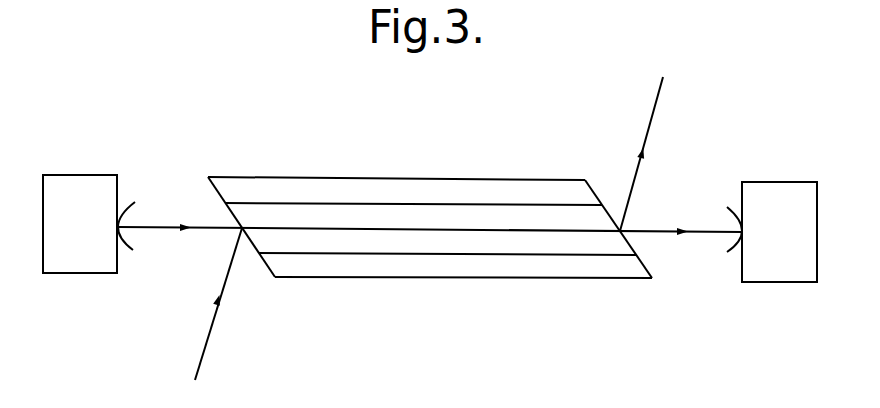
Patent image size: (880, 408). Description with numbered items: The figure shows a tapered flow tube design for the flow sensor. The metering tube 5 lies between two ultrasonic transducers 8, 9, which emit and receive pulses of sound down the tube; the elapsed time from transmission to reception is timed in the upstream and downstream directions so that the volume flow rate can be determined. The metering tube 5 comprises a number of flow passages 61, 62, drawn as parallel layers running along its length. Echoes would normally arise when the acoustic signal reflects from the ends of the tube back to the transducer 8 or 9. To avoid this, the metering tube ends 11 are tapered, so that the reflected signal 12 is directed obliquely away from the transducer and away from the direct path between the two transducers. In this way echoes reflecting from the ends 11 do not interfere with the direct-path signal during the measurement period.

The metering tube 5 is at (467, 175).
The ultrasonic transducer 8 is at (82, 263).
The ultrasonic transducer 9 is at (780, 283).
The metering tube end 11 is at (220, 198).
The reflected signal 12 is at (203, 355).
The flow passage 61 is at (282, 212).
The flow passage 62 is at (362, 240).